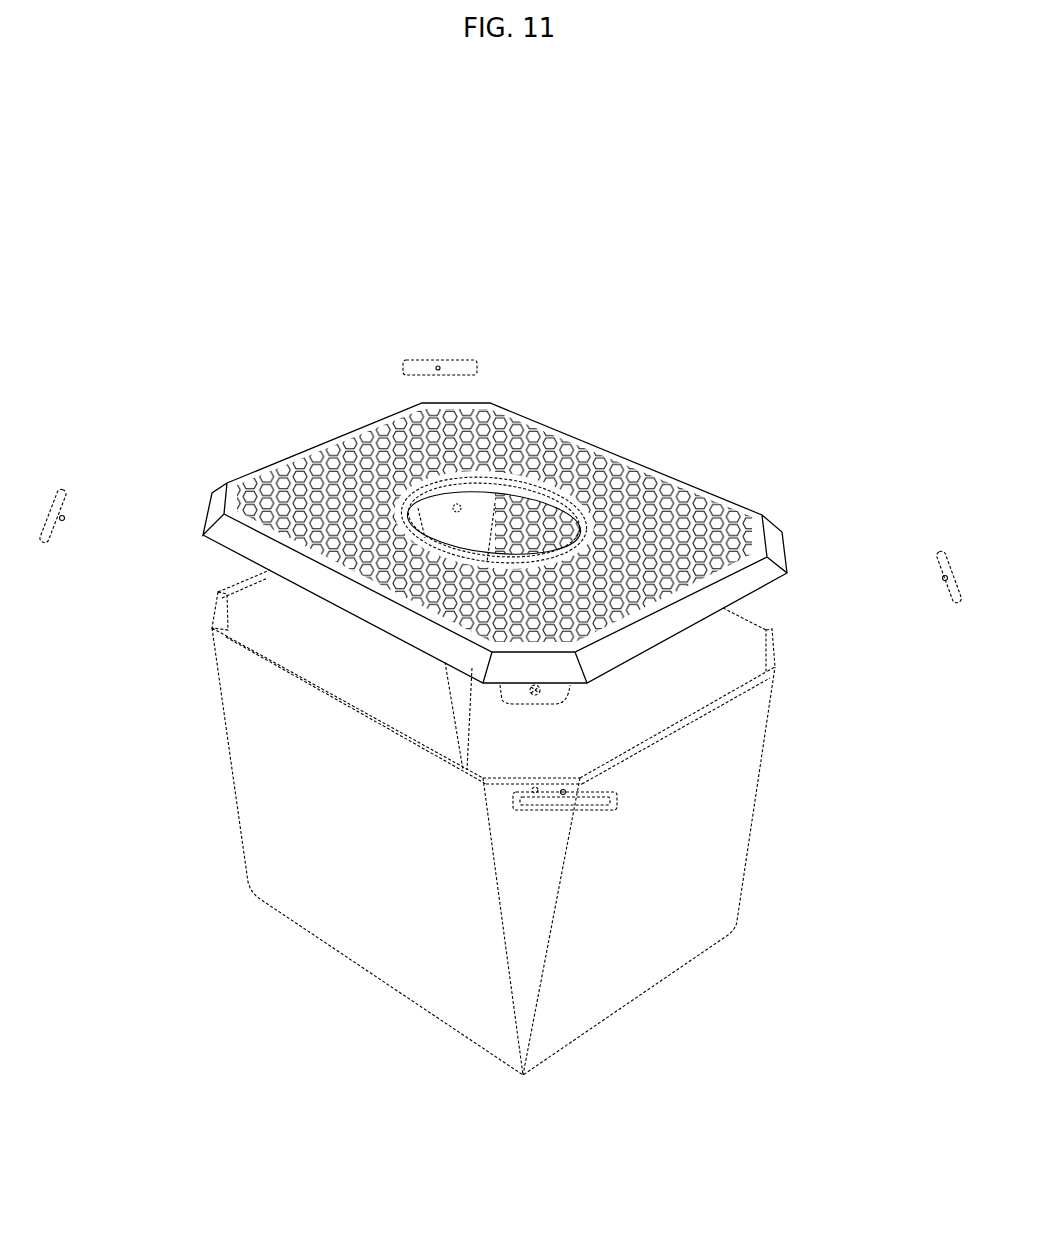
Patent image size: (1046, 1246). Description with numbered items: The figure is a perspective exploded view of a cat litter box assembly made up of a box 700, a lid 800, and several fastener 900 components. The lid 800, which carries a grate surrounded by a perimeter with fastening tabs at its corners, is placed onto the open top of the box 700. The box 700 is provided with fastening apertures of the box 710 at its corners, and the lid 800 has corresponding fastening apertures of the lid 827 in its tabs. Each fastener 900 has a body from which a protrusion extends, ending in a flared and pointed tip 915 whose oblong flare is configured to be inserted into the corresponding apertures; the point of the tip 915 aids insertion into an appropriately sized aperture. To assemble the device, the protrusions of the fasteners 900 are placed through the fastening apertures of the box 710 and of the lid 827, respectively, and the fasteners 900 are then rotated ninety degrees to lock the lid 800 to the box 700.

The box 700 is at (178, 778).
The fastening apertures of the box 710 is at (220, 620).
The lid 800 is at (312, 447).
The fastening apertures of the lid 827 is at (533, 692).
The fastener 900 is at (454, 357).
The flared and pointed tip 915 is at (64, 520).